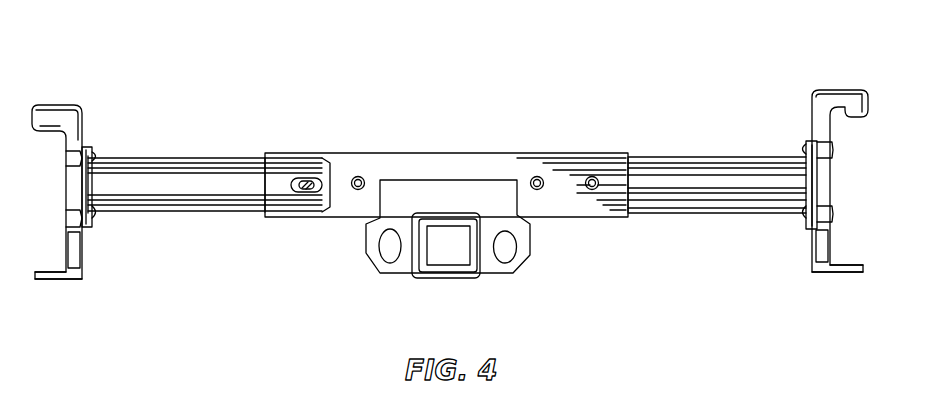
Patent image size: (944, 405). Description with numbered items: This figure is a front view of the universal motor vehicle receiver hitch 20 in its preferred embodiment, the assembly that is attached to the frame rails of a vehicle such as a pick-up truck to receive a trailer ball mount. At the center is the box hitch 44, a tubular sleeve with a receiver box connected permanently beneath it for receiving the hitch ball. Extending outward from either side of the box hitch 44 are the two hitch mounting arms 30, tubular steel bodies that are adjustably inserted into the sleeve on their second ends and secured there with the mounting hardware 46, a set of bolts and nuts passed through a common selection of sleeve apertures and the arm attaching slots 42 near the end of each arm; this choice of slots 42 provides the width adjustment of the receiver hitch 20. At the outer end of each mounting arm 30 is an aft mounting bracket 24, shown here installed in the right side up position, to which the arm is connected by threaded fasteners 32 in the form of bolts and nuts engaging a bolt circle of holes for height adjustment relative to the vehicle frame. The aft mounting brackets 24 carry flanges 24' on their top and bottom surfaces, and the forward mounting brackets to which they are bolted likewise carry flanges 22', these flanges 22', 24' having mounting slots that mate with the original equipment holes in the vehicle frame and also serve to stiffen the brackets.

The universal motor vehicle receiver hitch 20 is at (454, 148).
The flange 22' is at (449, 140).
The aft mounting bracket 24 is at (449, 204).
The flange 24' is at (449, 270).
The hitch mounting arm 30 is at (205, 157).
The threaded fasteners 32 is at (60, 277).
The arm attaching slots 42 is at (312, 198).
The box hitch 44 is at (549, 247).
The mounting hardware 46 is at (360, 177).